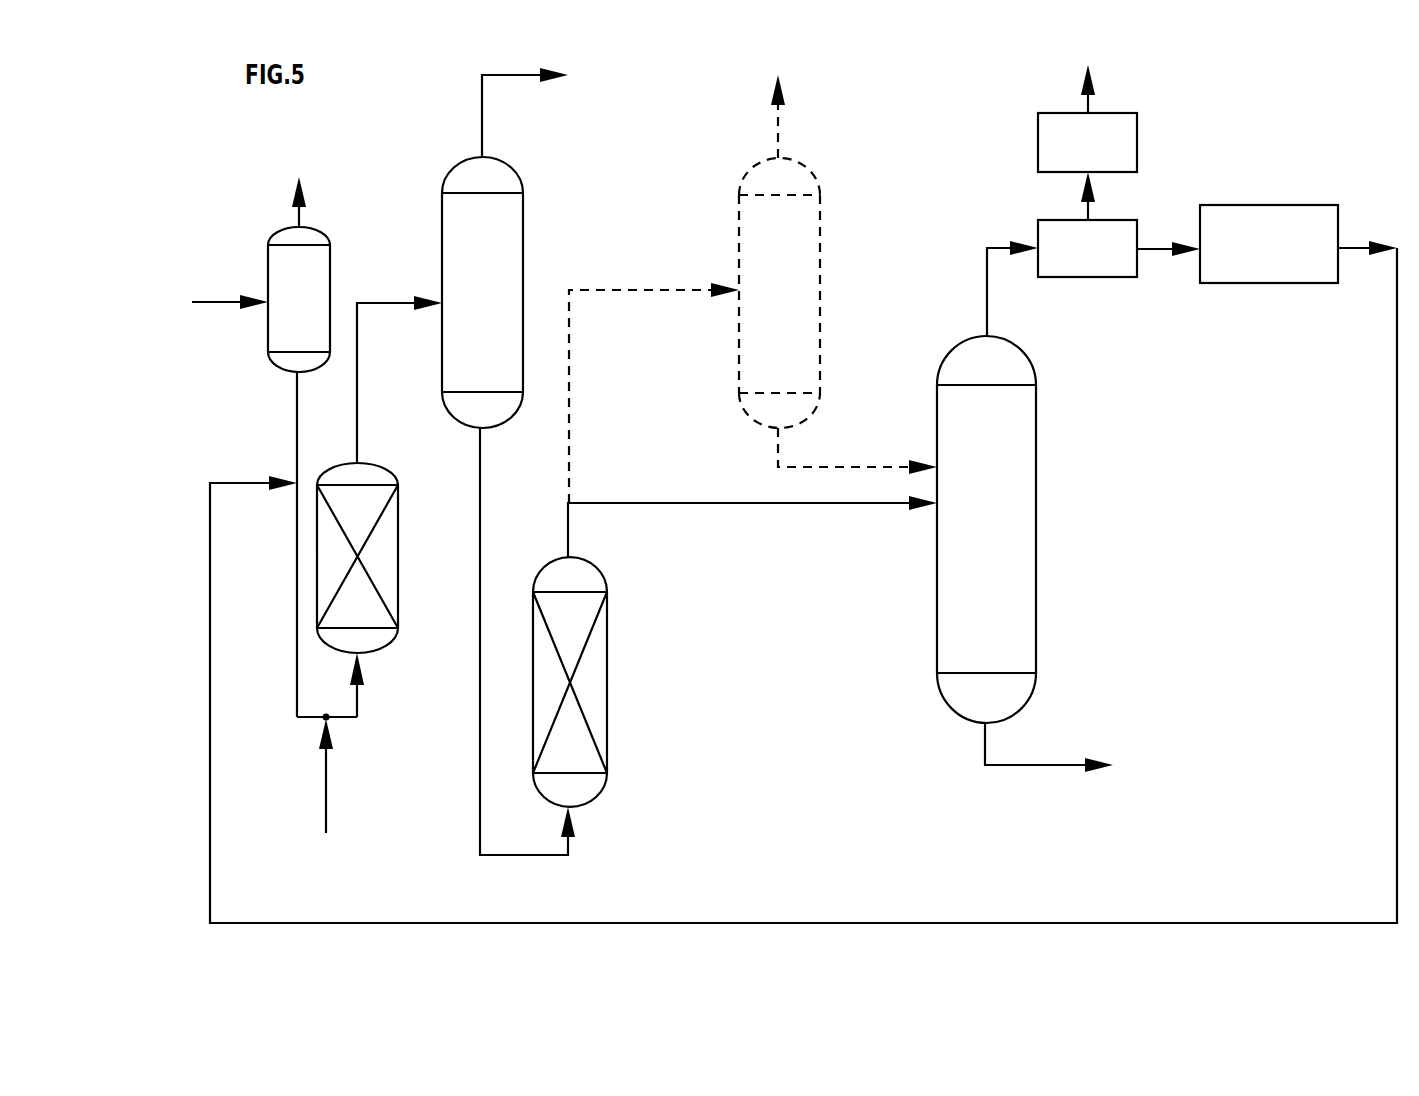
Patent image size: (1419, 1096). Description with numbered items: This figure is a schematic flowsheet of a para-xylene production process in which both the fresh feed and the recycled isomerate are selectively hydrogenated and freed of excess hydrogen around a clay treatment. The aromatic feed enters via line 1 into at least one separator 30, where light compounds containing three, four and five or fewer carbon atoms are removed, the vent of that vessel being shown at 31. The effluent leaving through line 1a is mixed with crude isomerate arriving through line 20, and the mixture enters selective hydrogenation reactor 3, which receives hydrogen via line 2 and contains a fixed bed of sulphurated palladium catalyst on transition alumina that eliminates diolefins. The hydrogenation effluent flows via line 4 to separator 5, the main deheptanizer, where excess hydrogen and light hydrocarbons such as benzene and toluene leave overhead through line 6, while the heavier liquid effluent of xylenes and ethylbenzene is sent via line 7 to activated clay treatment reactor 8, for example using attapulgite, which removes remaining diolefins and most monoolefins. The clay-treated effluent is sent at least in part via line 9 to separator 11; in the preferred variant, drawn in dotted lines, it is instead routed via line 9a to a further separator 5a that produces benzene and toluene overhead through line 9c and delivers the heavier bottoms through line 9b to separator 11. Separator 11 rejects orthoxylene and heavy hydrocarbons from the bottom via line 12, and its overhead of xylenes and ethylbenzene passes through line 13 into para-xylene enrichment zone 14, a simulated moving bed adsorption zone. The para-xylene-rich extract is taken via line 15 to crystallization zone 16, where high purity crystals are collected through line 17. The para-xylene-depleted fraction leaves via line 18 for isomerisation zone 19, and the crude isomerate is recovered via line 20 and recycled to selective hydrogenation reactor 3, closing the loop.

The feed line 1 is at (218, 302).
The separator 30 effluent line 1a is at (297, 403).
The hydrogen line 2 is at (324, 766).
The selective hydrogenation reactor 3 is at (346, 525).
The hydrogenation effluent line 4 is at (358, 368).
The separator (main deheptanizer) 5 is at (470, 238).
The further separator 5a is at (763, 238).
The overhead line 6 is at (482, 97).
The bottoms line 7 is at (480, 512).
The activated clay treatment reactor 8 is at (560, 629).
The clay reactor effluent line 9 is at (743, 505).
The line to further separator 9a is at (570, 332).
The separator 5a bottoms line 9b is at (888, 467).
The separator 5a overhead line 9c is at (778, 121).
The separator 11 is at (966, 430).
The bottoms line 12 is at (1007, 765).
The overhead line 13 is at (987, 265).
The para-xylene enrichment zone 14 is at (1072, 264).
The extract line 15 is at (1095, 195).
The crystallization zone 16 is at (1072, 156).
The para-xylene crystals line 17 is at (1089, 103).
The para-xylene-depleted fraction line 18 is at (1145, 250).
The isomerisation zone 19 is at (1253, 256).
The isomerate line 20 is at (210, 710).
The separator 30 is at (286, 283).
The vent line 31 is at (302, 197).